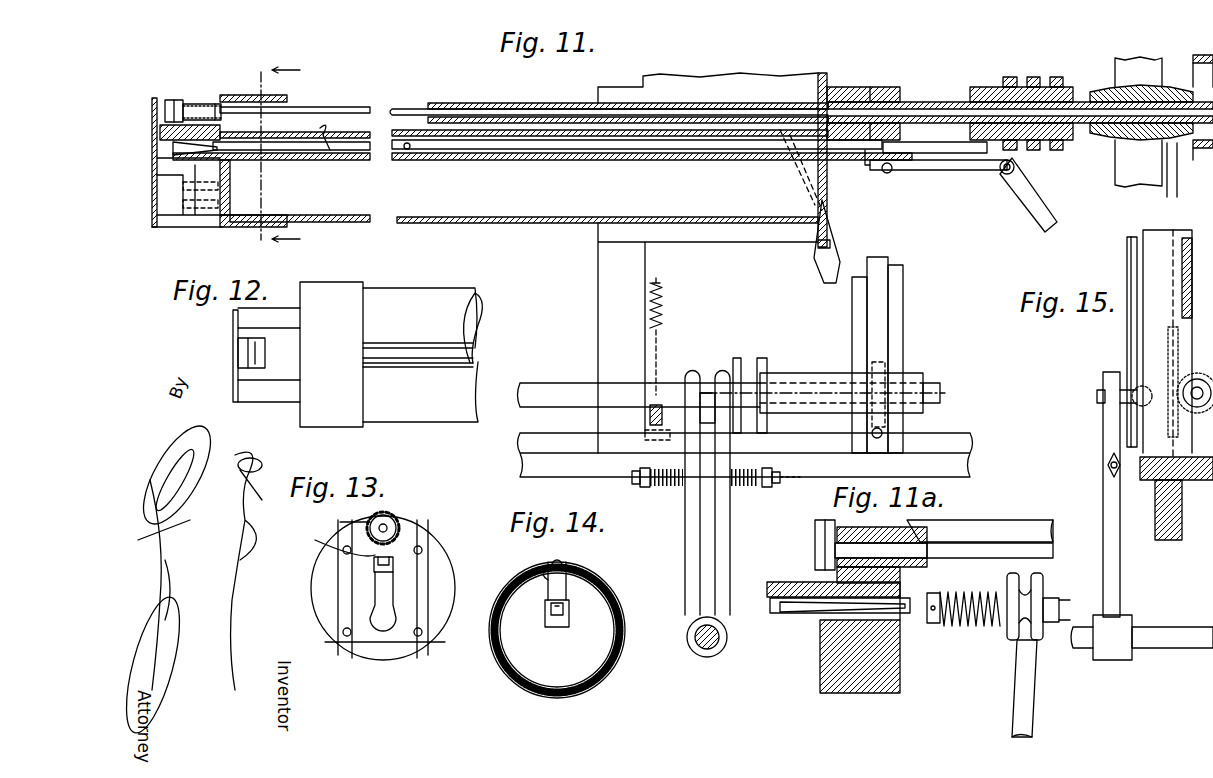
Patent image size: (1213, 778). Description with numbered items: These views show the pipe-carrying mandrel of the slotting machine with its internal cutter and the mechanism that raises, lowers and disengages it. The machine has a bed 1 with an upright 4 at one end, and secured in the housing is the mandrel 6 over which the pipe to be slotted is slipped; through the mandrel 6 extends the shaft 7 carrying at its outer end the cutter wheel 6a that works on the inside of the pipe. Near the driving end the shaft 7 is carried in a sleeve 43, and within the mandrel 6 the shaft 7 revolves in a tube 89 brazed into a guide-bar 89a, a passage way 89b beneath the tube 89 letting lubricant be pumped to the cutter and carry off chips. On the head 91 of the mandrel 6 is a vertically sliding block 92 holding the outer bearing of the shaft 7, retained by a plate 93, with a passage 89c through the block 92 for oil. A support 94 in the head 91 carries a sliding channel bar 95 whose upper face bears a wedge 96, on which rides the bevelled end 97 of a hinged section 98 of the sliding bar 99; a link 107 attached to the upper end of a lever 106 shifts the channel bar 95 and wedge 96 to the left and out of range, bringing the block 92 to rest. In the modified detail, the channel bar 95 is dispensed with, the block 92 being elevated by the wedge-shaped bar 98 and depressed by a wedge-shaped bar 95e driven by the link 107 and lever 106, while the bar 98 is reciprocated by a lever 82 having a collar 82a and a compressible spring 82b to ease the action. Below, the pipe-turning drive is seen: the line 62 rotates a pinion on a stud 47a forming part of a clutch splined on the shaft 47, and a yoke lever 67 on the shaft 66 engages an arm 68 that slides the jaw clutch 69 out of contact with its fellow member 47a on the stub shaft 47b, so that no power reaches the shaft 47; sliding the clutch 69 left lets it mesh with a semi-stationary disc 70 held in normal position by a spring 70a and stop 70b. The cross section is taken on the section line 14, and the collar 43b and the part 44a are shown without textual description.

In FIG. 15, the bed 1 is at (1182, 514).
In FIG. 11, the upright 4 is at (1115, 68).
In FIG. 11, the mandrel 6 is at (474, 223).
In FIG. 12, the mandrel 6 is at (442, 422).
In FIG. 14, the mandrel 6 is at (615, 595).
In FIG. 11, the cutter wheel 6a is at (172, 100).
In FIG. 11A, the cutter wheel 6a is at (815, 538).
In FIG. 12, the cutter wheel 6a is at (238, 352).
In FIG. 13, the cutter wheel 6a is at (395, 520).
In FIG. 11, the shaft 7 is at (505, 103).
In FIG. 11A, the shaft 7 is at (985, 558).
In FIG. 12, the shaft 7 is at (474, 348).
In FIG. 13, the shaft 7 is at (350, 522).
In FIG. 14, the shaft 7 is at (563, 564).
In FIG. 11, the section line 14 is at (272, 154).
In FIG. 11, the sleeve 43 is at (928, 102).
In FIG. 11, the toothed collar 43b is at (1022, 80).
In FIG. 11, the bracket 44a is at (1170, 186).
In FIG. 11, the shaft 47 is at (567, 385).
In FIG. 11, the clutch member 47a is at (770, 365).
In FIG. 11, the stub shaft 47b is at (940, 393).
In FIG. 11, the line 62 is at (880, 316).
In FIG. 15, the line 62 is at (1127, 325).
In FIG. 11, the shaft 66 is at (720, 636).
In FIG. 15, the shaft 66 is at (1172, 627).
In FIG. 11, the yoke lever 67 is at (730, 510).
In FIG. 15, the yoke lever 67 is at (1103, 512).
In FIG. 11, the arm 68 is at (707, 393).
In FIG. 15, the arm 68 is at (1097, 396).
In FIG. 11, the jaw clutch 69 is at (737, 362).
In FIG. 11, the semi-stationary disc 70 is at (650, 420).
In FIG. 11, the spring 70a is at (662, 300).
In FIG. 11, the stop 70b is at (645, 440).
In FIG. 11A, the lever 82 is at (1030, 688).
In FIG. 11A, the collar 82a is at (1043, 590).
In FIG. 11A, the compressible spring 82b is at (935, 623).
In FIG. 11, the tube 89 is at (725, 108).
In FIG. 11, the guide-bar 89a is at (818, 183).
In FIG. 11, the passage way 89b is at (325, 145).
In FIG. 12, the passage way 89b is at (480, 330).
In FIG. 14, the passage way 89b is at (545, 568).
In FIG. 11, the passage 89c is at (230, 107).
In FIG. 11, the head 91 is at (260, 97).
In FIG. 12, the head 91 is at (355, 427).
In FIG. 14, the head 91 is at (617, 662).
In FIG. 11, the sliding block 92 is at (175, 132).
In FIG. 11A, the sliding block 92 is at (835, 670).
In FIG. 12, the sliding block 92 is at (287, 380).
In FIG. 13, the sliding block 92 is at (400, 545).
In FIG. 11, the plate 93 is at (152, 190).
In FIG. 11, the support 94 is at (230, 168).
In FIG. 13, the support 94 is at (393, 590).
In FIG. 11, the channel bar 95 is at (280, 160).
In FIG. 13, the channel bar 95 is at (393, 565).
In FIG. 14, the channel bar 95 is at (551, 615).
In FIG. 11A, the wedge-shaped bar 95e is at (1010, 525).
In FIG. 11, the wedge 96 is at (173, 148).
In FIG. 13, the wedge 96 is at (336, 543).
In FIG. 14, the wedge 96 is at (545, 614).
In FIG. 11, the bevelled end 97 is at (213, 104).
In FIG. 11, the hinged section 98 is at (328, 143).
In FIG. 11A, the hinged section 98 is at (825, 613).
In FIG. 11, the sliding bar 99 is at (536, 140).
In FIG. 11A, the sliding bar 99 is at (965, 627).
In FIG. 11, the lever 106 is at (1050, 207).
In FIG. 11, the link 107 is at (940, 170).